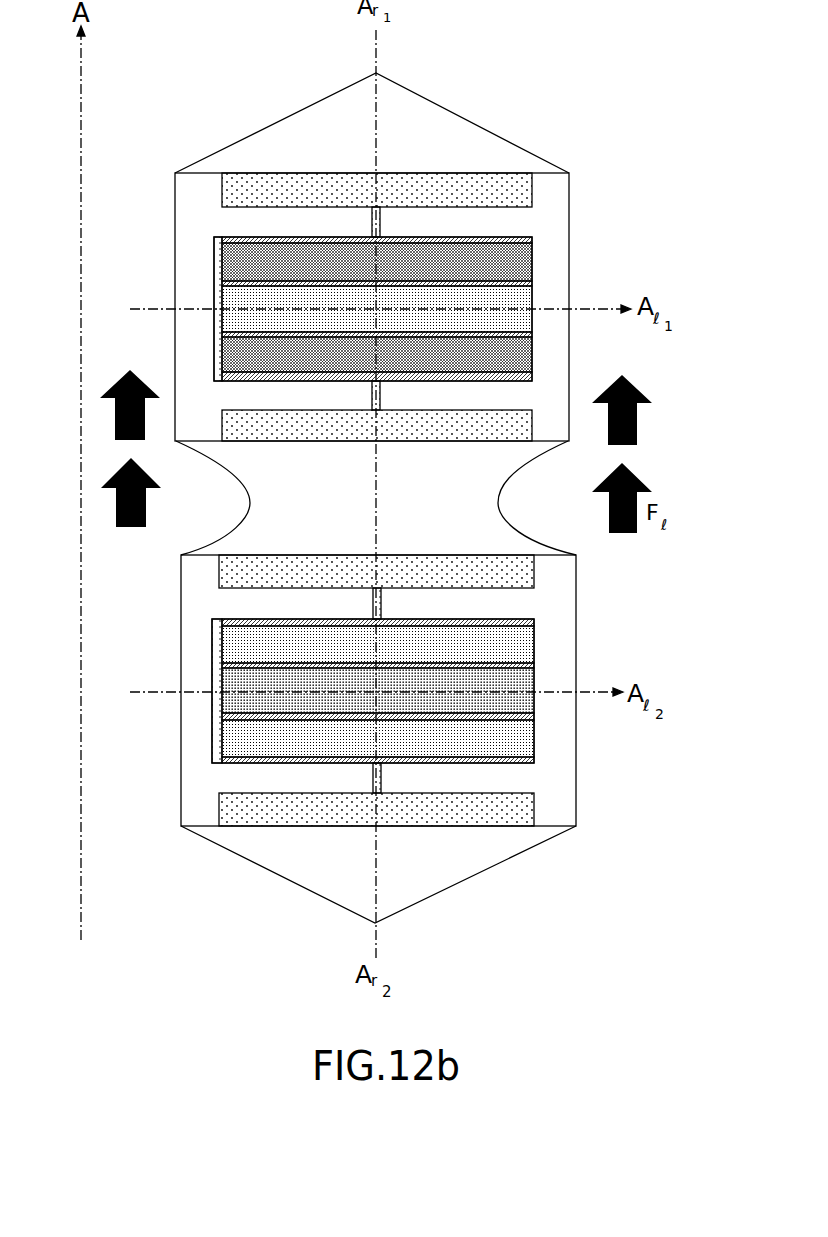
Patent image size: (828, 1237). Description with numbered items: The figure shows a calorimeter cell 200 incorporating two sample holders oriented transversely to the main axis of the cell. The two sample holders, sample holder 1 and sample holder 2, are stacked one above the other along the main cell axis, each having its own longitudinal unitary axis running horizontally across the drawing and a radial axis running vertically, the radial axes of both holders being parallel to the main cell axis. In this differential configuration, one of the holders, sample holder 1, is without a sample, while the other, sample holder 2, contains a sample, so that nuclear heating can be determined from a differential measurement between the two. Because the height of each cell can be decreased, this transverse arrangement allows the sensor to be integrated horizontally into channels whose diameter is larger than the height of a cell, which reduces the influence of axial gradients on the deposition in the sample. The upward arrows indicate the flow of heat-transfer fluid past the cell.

The sample holder 1 is at (558, 788).
The sample holder 2 is at (555, 232).
The calorimeter cell 200 is at (423, 498).